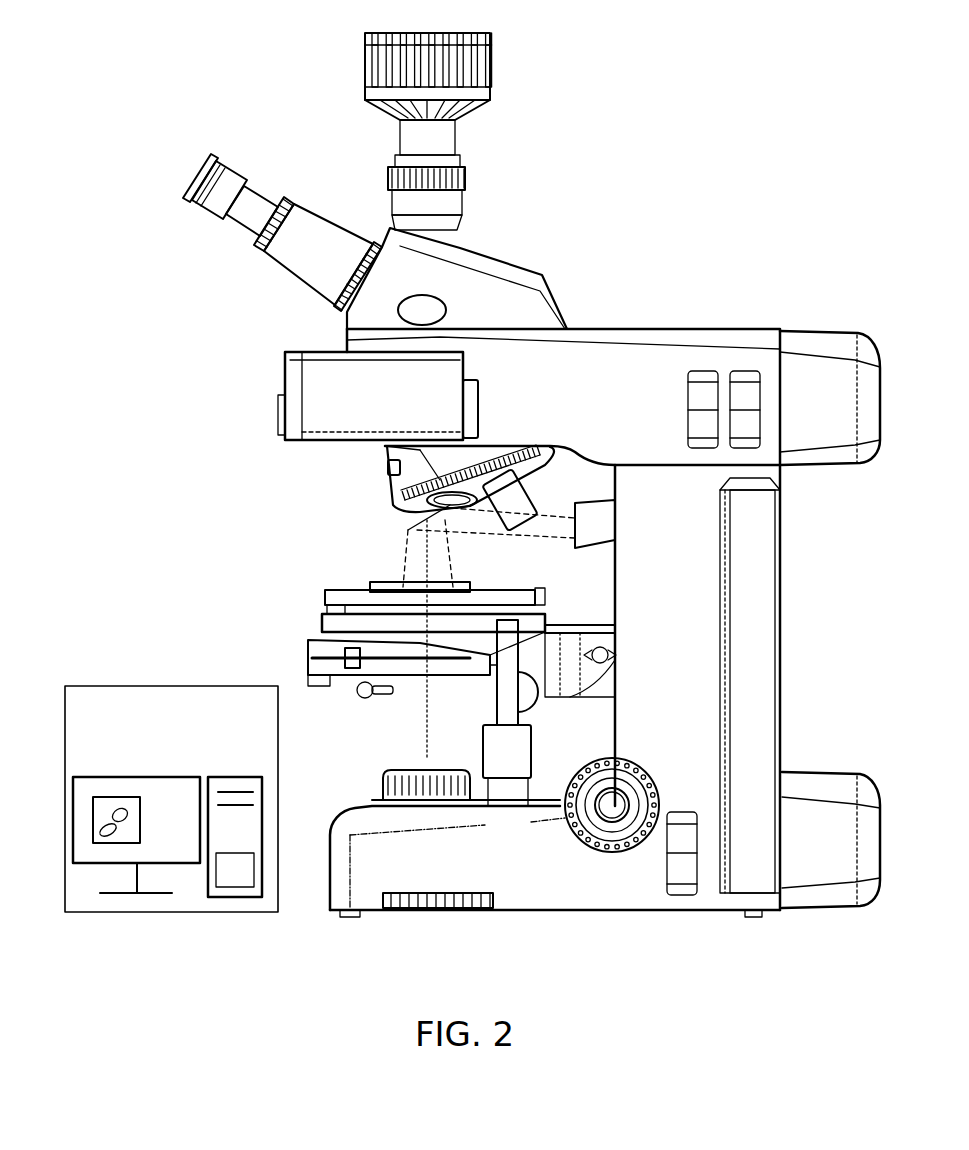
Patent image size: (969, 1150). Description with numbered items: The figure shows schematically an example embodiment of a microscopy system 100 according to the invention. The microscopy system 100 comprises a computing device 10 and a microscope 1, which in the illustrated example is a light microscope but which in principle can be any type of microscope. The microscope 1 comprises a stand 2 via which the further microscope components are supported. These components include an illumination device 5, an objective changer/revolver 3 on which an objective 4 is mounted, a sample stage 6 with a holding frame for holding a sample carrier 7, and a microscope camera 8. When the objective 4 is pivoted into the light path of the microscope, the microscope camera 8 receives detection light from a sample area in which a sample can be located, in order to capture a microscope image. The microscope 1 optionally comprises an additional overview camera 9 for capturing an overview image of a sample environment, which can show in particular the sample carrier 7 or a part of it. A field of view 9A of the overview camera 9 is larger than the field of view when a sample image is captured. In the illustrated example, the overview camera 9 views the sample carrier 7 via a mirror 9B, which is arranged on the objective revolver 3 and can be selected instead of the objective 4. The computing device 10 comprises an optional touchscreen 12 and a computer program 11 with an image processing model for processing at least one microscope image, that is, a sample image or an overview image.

The microscopy system 100 is at (662, 74).
The microscope 1 is at (718, 294).
The stand 2 is at (758, 742).
The objective changer/revolver 3 is at (387, 468).
The objective 4 is at (530, 488).
The illumination device 5 is at (387, 857).
The sample stage 6 is at (345, 617).
The sample carrier 7 is at (370, 591).
The microscope camera 8 is at (483, 62).
The overview camera 9 is at (605, 539).
The field of view 9A is at (405, 552).
The mirror 9B is at (405, 525).
The computing device 10 is at (183, 725).
The computer program 11 is at (250, 883).
The touchscreen 12 is at (114, 790).